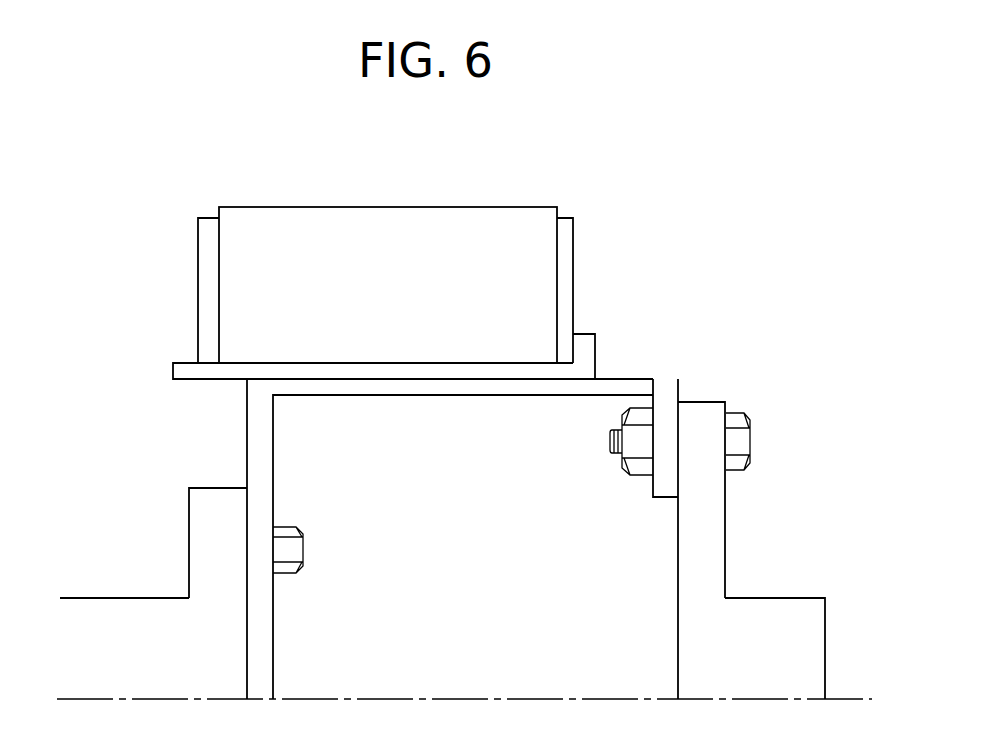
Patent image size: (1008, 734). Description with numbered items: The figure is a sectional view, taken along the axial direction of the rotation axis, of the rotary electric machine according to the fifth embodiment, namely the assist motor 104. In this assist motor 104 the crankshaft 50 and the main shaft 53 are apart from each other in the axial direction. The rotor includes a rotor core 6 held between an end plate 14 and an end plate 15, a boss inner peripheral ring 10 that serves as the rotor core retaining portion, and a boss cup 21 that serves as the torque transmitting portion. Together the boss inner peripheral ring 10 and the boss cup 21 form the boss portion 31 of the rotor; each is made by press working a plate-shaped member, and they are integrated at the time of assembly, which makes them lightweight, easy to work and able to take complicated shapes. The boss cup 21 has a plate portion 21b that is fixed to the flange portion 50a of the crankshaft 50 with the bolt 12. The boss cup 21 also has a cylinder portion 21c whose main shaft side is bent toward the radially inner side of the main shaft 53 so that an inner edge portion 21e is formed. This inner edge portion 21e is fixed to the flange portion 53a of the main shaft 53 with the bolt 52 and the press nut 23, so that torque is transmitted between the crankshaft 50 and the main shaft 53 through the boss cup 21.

The assist motor 104 is at (331, 182).
The rotor core 6 is at (493, 223).
The end plate 14 is at (565, 229).
The end plate 15 is at (208, 257).
The boss inner peripheral ring 10 is at (173, 370).
The boss portion 31 is at (93, 360).
The boss cup 21 is at (247, 407).
The plate portion 21b is at (273, 440).
The cylinder portion 21c is at (440, 396).
The inner edge portion 21e is at (666, 500).
The press nut 23 is at (638, 472).
The bolt 12 is at (293, 548).
The bolt 52 is at (745, 443).
The main shaft 53 is at (780, 622).
The flange portion 53a is at (726, 510).
The crankshaft 50 is at (115, 612).
The flange portion 50a is at (189, 500).